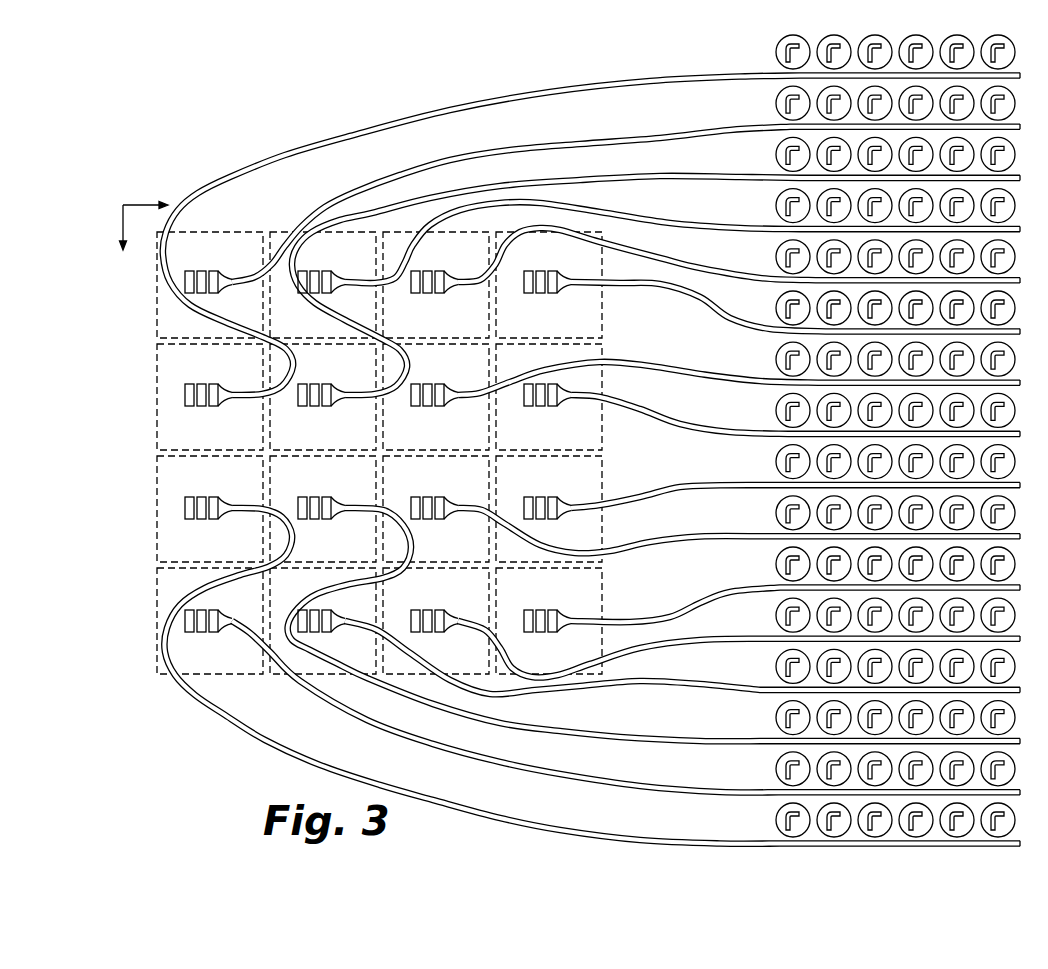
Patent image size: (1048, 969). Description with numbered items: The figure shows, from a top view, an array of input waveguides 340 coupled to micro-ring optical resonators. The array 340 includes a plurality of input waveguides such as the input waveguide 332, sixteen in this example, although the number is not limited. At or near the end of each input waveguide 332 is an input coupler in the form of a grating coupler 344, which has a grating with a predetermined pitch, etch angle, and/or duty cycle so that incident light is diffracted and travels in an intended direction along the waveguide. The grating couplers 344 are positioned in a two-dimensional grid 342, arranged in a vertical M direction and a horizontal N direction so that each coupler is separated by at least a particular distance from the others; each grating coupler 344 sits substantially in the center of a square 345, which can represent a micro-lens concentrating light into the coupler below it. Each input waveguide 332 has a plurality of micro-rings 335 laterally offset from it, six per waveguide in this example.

The input waveguide 332 is at (338, 136).
The micro-ring 335 is at (765, 49).
The array of input waveguides 340 is at (176, 96).
The two-dimensional grid 342 is at (122, 216).
The grating coupler 344 is at (174, 387).
The square 345 is at (147, 440).